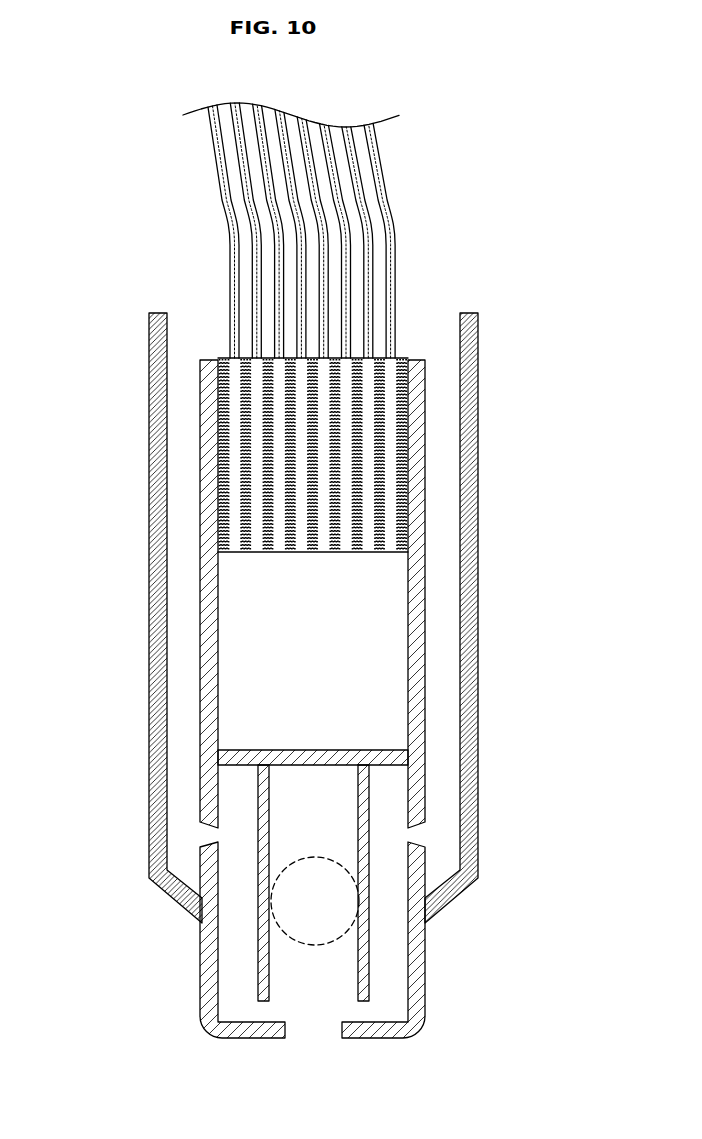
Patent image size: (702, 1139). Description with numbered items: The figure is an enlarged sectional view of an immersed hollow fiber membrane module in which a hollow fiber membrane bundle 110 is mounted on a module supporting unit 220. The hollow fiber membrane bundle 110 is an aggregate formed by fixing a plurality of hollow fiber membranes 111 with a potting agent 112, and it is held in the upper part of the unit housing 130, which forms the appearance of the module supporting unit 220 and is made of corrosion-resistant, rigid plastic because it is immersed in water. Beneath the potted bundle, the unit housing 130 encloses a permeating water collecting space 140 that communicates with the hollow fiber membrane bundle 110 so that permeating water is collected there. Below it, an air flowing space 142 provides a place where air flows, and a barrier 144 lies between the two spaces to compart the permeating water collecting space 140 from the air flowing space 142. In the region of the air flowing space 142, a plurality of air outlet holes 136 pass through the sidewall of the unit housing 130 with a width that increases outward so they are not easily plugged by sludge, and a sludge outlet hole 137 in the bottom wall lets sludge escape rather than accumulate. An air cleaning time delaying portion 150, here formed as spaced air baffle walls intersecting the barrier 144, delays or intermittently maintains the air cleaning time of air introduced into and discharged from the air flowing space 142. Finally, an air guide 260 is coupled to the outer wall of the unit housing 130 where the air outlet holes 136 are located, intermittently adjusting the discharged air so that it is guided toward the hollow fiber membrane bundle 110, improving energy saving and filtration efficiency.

The hollow fiber membrane bundle 110 is at (82, 334).
The hollow fiber membrane 111 is at (230, 340).
The potting agent 112 is at (230, 400).
The unit housing 130 is at (420, 627).
The air outlet hole 136 is at (212, 826).
The sludge outlet hole 137 is at (308, 1028).
The permeating water collecting space 140 is at (257, 665).
The air flowing space 142 is at (236, 795).
The barrier 144 is at (225, 756).
The air cleaning time delaying portion 150 is at (262, 970).
The module supporting unit 220 is at (500, 477).
The air guide 260 is at (160, 560).